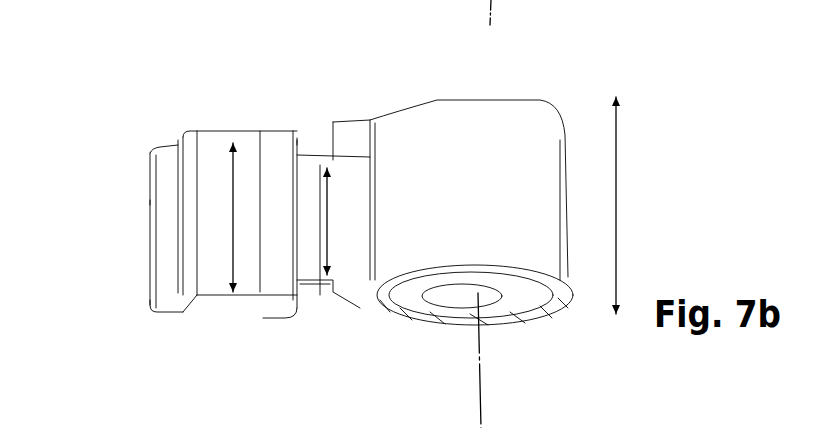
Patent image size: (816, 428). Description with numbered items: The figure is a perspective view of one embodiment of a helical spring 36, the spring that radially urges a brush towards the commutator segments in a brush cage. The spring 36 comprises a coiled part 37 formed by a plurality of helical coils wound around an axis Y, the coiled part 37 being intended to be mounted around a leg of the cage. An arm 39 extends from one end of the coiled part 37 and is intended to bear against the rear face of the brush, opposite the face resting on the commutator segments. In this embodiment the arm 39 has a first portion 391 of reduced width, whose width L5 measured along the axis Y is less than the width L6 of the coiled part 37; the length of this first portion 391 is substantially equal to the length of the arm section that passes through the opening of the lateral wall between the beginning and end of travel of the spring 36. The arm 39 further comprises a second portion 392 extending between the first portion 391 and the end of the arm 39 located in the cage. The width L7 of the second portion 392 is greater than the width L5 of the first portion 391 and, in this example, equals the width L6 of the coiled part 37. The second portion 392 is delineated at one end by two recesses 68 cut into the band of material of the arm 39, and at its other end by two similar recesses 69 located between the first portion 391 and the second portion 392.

The helical spring 36 is at (200, 72).
The coiled part 37 is at (493, 153).
The arm 39 is at (311, 314).
The recesses 68 is at (332, 160).
The recesses 69 is at (297, 143).
The first portion 391 is at (318, 200).
The second portion 392 is at (213, 195).
The width of first portion L5 is at (327, 228).
The width of coiled part L6 is at (618, 205).
The width of second portion L7 is at (233, 227).
The axis Y is at (484, 372).